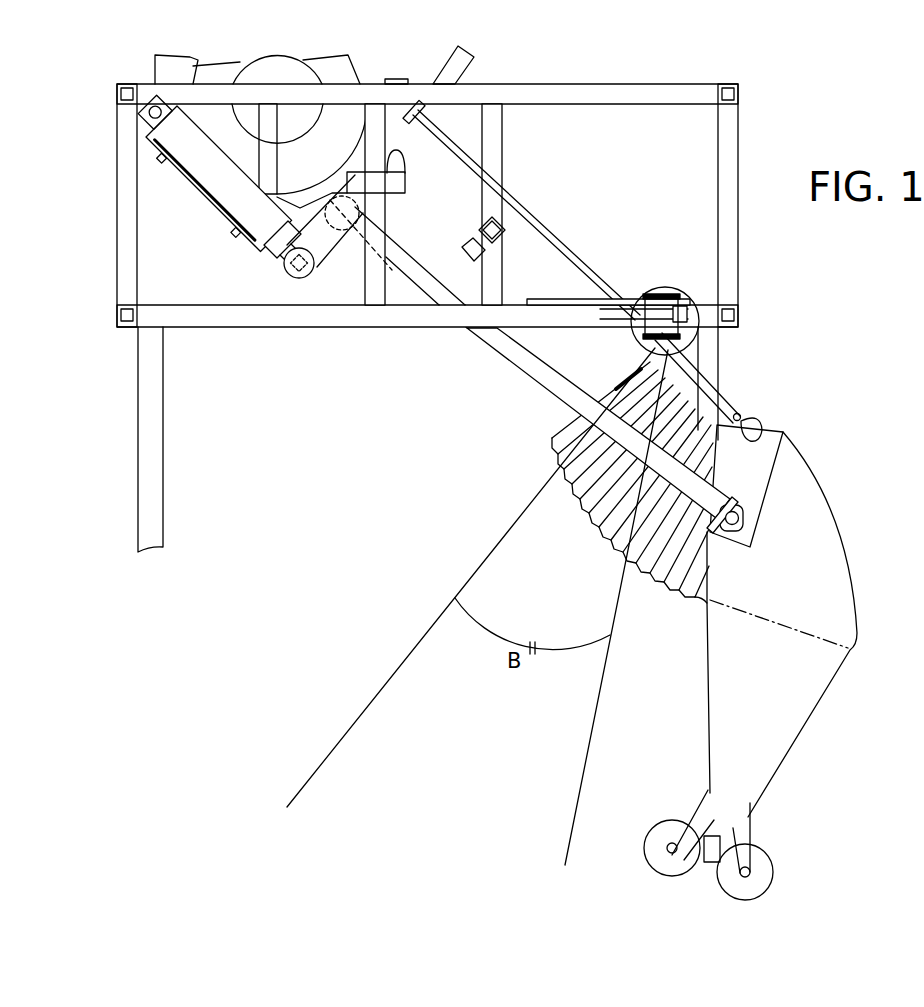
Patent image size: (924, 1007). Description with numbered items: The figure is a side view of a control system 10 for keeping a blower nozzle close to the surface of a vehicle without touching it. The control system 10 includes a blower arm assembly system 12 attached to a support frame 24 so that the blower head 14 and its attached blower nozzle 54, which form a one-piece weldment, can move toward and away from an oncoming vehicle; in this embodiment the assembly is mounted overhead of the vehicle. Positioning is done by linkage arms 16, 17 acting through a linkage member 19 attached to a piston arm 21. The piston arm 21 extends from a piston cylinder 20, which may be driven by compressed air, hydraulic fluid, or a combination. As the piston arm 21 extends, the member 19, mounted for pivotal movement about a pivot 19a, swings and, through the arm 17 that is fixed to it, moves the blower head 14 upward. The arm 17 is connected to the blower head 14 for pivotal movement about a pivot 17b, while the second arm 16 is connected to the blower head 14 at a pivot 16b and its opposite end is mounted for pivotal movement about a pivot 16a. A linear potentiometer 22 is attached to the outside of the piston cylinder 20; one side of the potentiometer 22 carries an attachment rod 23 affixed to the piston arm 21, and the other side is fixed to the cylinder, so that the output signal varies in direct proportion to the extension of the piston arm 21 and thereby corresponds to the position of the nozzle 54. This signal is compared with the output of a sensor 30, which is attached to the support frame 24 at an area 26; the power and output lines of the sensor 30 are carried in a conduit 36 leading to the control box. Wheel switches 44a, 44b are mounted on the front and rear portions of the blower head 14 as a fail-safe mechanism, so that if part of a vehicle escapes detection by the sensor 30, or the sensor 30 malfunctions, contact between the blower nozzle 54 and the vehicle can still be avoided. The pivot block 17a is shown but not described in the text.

The control system 10 is at (361, 83).
The blower arm assembly system 12 is at (531, 390).
The blower head 14 is at (835, 511).
The second arm 16 is at (532, 213).
The pivot 16a is at (401, 84).
The pivot 16b is at (758, 428).
The arm 17 is at (428, 270).
The lever pivot block 17a is at (453, 228).
The pivot 17b is at (727, 543).
The linkage member 19 is at (348, 262).
The pivot 19a is at (404, 171).
The piston cylinder 20 is at (313, 255).
The piston arm 21 is at (276, 265).
The linear potentiometer 22 is at (221, 228).
The attachment rod 23 is at (293, 262).
The support frame 24 is at (740, 157).
The area 26 is at (700, 338).
The sensor 30 is at (690, 314).
The conduit 36 is at (560, 310).
The wheel switch 44a is at (643, 857).
The wheel switch 44b is at (779, 851).
The blower nozzle 54 is at (705, 864).